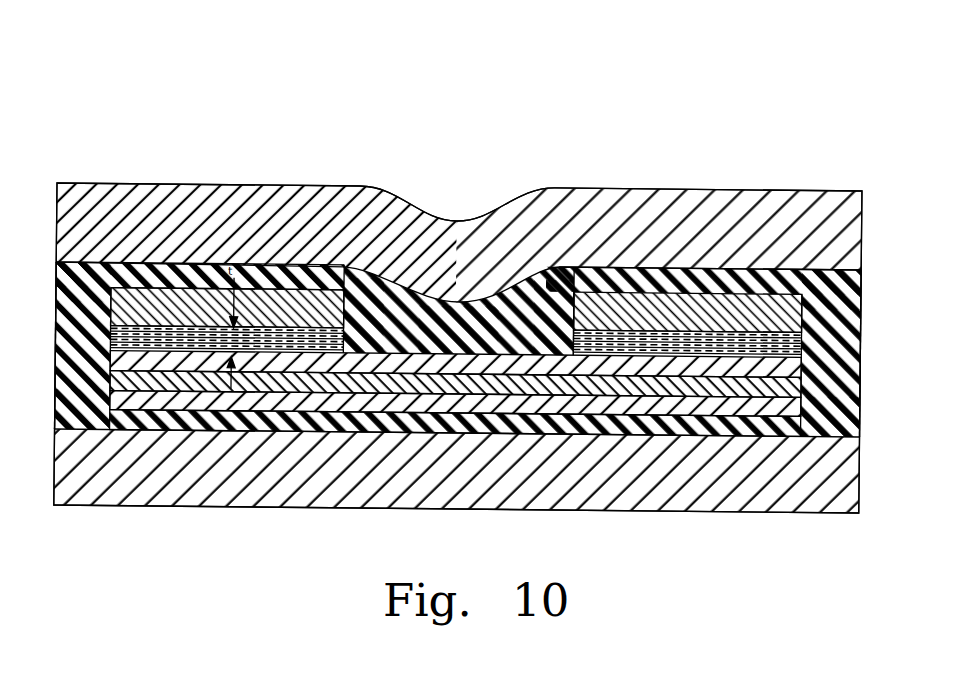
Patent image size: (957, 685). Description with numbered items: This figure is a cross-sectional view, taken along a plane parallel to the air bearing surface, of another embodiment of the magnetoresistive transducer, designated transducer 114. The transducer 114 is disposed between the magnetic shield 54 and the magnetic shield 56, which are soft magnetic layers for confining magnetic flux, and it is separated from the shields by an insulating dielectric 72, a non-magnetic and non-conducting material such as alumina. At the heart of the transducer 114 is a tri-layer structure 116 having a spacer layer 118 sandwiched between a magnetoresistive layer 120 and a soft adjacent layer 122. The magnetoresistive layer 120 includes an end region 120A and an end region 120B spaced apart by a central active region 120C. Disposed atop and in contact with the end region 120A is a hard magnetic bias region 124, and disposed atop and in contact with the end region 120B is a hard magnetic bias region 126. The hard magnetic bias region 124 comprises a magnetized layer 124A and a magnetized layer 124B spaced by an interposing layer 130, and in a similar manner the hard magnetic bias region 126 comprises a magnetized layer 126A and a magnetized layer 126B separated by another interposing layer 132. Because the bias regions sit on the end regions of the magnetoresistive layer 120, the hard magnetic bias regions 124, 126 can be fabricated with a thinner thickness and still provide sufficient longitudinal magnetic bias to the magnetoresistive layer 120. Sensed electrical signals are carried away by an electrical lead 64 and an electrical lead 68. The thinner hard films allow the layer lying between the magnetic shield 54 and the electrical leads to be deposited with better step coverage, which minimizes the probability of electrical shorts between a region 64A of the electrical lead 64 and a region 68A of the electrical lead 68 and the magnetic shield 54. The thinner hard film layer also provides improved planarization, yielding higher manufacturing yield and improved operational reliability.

The transducer 114 is at (147, 72).
The magnetic shield 54 is at (100, 190).
The magnetic shield 56 is at (180, 490).
The electrical lead 64 is at (168, 290).
The region of electrical lead 64A is at (272, 308).
The electrical lead 68 is at (644, 300).
The region of electrical lead 68A is at (578, 315).
The insulating dielectric 72 is at (197, 275).
The tri-layer structure 116 is at (523, 417).
The spacer layer 118 is at (408, 380).
The magnetoresistive layer 120 is at (487, 295).
The end region of magnetoresistive layer 120A is at (376, 296).
The end region of magnetoresistive layer 120B is at (542, 336).
The central active region 120C is at (460, 362).
The soft adjacent layer 122 is at (302, 398).
The hard magnetic bias region 124 is at (276, 318).
The magnetized layer 124A is at (60, 306).
The magnetized layer 124B is at (58, 358).
The hard magnetic bias region 126 is at (705, 330).
The magnetized layer 126A is at (858, 316).
The magnetized layer 126B is at (862, 352).
The interposing layer 130 is at (57, 348).
The interposing layer 132 is at (861, 355).